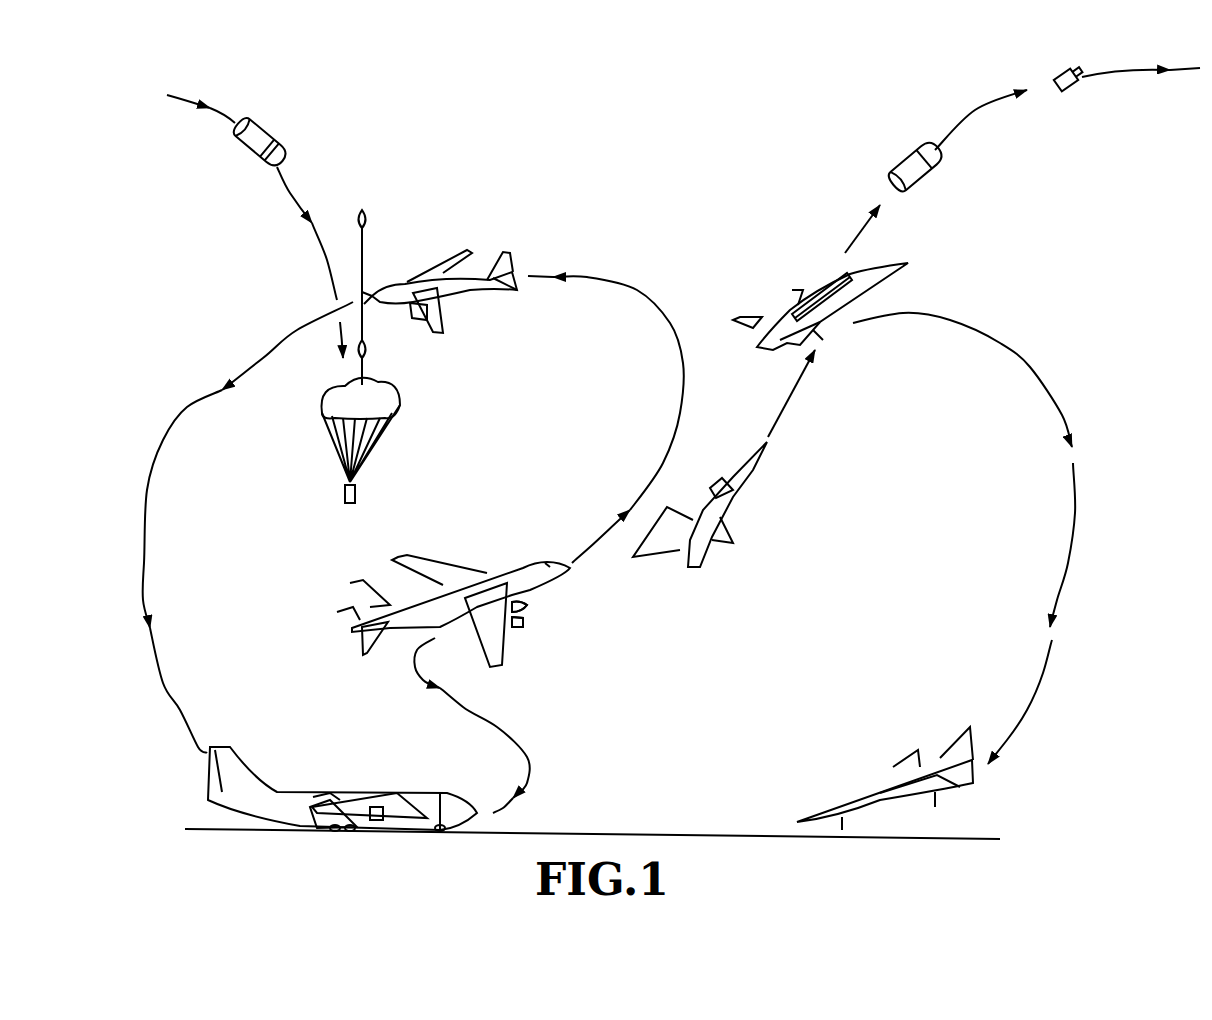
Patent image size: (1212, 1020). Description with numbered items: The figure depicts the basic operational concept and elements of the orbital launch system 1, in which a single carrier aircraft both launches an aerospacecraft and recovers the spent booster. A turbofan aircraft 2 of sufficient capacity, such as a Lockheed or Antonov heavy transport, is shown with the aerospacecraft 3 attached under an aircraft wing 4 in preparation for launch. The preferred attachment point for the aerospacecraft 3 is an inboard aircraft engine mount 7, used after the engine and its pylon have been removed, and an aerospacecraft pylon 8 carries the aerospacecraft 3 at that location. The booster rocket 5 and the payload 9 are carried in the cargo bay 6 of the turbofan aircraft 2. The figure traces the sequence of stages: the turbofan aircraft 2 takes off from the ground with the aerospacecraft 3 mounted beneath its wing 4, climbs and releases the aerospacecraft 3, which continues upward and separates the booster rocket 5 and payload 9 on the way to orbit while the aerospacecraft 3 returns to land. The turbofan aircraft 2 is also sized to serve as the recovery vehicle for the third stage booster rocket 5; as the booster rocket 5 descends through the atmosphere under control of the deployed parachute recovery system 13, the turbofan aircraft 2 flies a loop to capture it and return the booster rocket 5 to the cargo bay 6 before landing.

The orbital launch system 1 is at (307, 752).
The turbofan aircraft 2 is at (405, 283).
The aerospacecraft 3 is at (885, 286).
The aircraft wing 4 is at (383, 796).
The booster rocket 5 is at (272, 142).
The cargo bay 6 is at (823, 290).
The inboard aircraft engine mount 7 is at (520, 622).
The aerospacecraft pylon 8 is at (530, 594).
The payload 9 is at (1068, 96).
The deployed parachute recovery system 13 is at (399, 403).